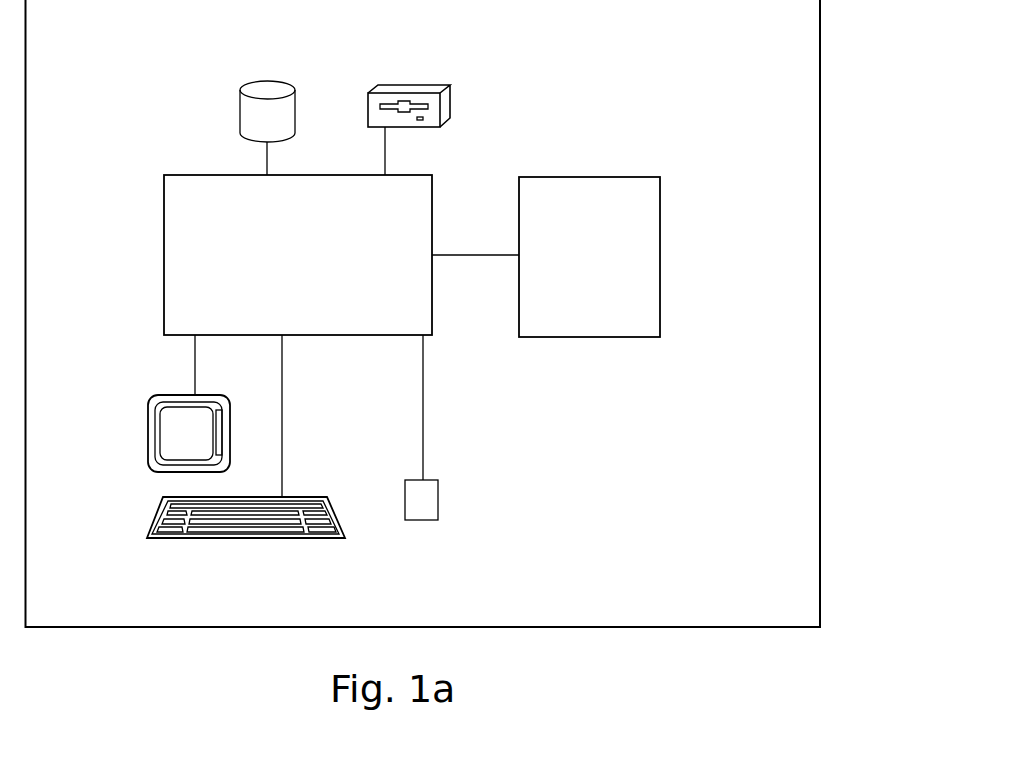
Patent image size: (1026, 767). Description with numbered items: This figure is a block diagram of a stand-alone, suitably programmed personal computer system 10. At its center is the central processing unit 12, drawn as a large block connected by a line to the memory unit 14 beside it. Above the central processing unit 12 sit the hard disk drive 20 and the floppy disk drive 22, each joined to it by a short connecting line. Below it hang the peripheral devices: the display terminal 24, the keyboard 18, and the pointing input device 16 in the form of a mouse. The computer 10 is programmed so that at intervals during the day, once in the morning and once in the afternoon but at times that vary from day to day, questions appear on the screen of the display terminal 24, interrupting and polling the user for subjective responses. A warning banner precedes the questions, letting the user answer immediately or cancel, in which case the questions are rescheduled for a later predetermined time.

The personal computer system 10 is at (820, 366).
The central processing unit 12 is at (165, 258).
The memory unit 14 is at (660, 250).
The pointing input device 16 is at (438, 490).
The keyboard 18 is at (345, 536).
The hard disk drive 20 is at (240, 124).
The floppy disk drive 22 is at (368, 97).
The display terminal 24 is at (148, 457).